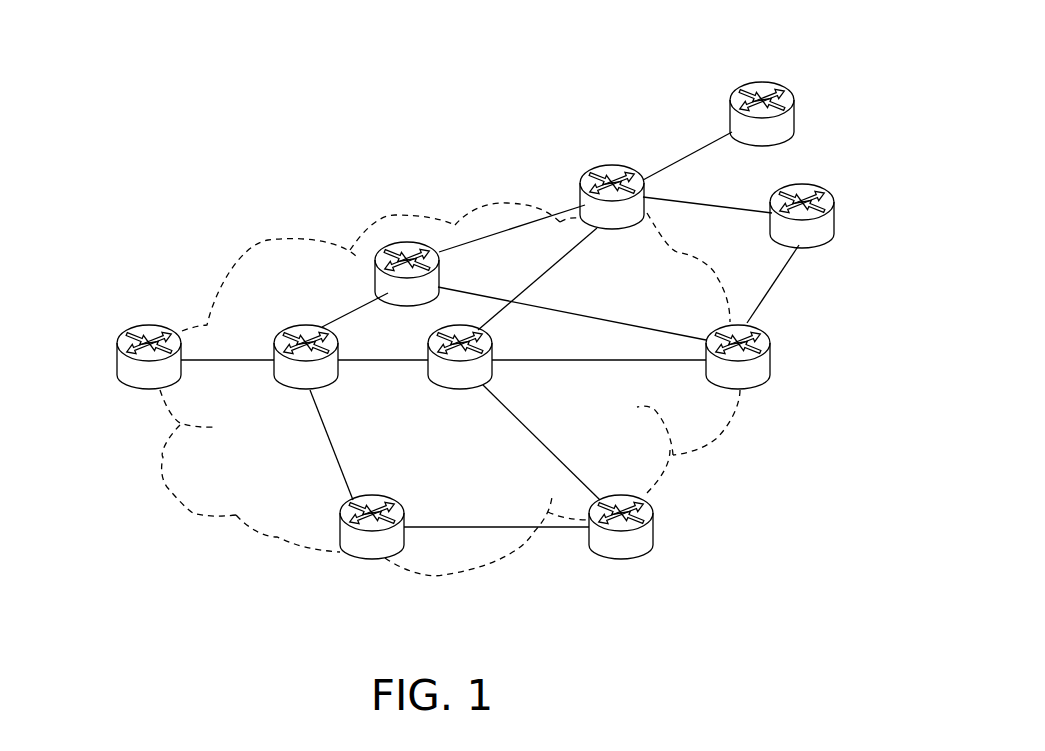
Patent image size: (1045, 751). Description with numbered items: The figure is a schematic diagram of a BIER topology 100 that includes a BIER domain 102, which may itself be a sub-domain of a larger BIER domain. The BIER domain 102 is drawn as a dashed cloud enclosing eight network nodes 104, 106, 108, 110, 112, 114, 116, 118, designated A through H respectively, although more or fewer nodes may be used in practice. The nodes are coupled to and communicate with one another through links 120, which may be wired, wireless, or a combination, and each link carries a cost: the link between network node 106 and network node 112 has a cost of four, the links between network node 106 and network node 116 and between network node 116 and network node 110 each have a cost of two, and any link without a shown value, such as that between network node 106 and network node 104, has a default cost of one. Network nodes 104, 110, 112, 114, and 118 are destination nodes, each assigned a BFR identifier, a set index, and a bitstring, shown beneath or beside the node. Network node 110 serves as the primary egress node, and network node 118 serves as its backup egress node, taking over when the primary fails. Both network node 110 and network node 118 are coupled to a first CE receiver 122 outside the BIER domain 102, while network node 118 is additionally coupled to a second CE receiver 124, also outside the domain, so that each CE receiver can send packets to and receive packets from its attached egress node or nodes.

The BIER topology 100 is at (248, 69).
The BIER domain 102 is at (268, 241).
The network node 104 is at (129, 326).
The network node 106 is at (295, 325).
The network node 108 is at (470, 390).
The network node 110 is at (756, 390).
The network node 112 is at (374, 495).
The network node 114 is at (617, 495).
The network node 116 is at (400, 242).
The network node 118 is at (624, 231).
The links 120 is at (237, 362).
The first customer edge (CE) receiver 122 is at (835, 225).
The second customer edge (CE) receiver 124 is at (795, 118).